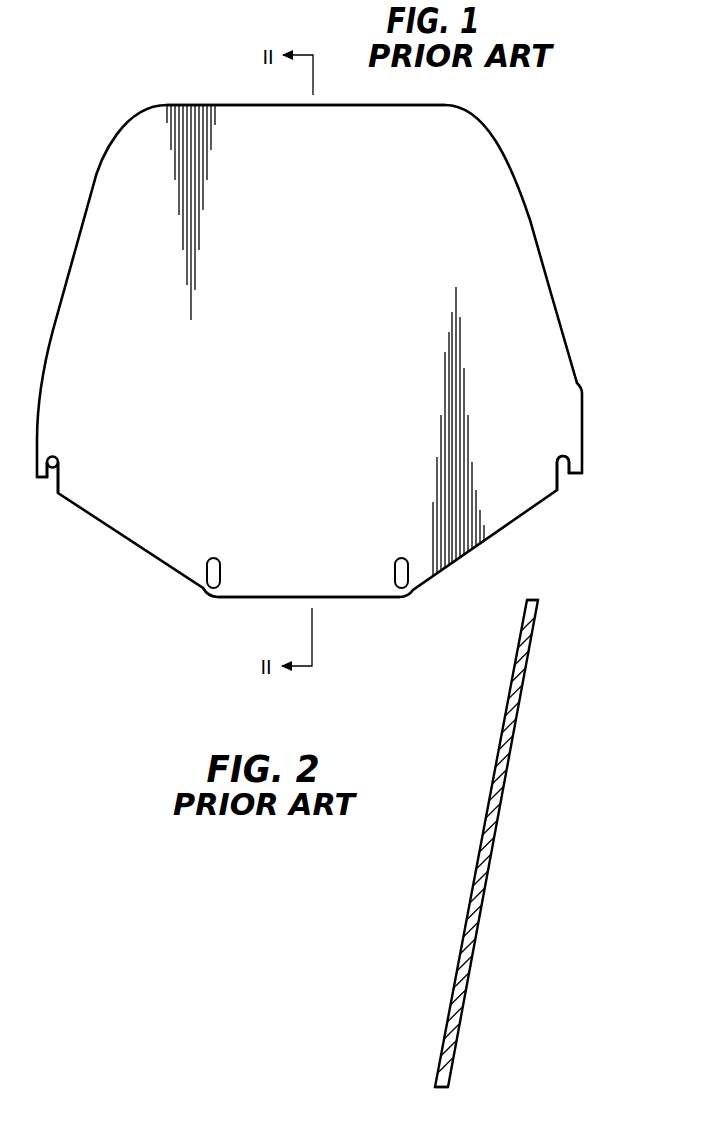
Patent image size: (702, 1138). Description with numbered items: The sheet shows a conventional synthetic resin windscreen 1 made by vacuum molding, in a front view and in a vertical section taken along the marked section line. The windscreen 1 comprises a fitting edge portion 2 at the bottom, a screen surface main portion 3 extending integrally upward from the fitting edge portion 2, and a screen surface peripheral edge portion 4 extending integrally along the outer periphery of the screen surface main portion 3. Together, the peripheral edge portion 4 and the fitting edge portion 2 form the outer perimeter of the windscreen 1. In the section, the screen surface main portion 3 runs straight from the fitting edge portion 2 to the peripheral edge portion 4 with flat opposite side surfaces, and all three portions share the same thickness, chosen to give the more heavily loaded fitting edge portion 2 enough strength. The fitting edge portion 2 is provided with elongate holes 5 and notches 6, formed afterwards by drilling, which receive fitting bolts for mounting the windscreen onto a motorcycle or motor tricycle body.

In FIG. 1, the windscreen 1 is at (537, 218).
In FIG. 2, the windscreen 1 is at (533, 719).
In FIG. 1, the fitting edge portion 2 is at (268, 578).
In FIG. 2, the fitting edge portion 2 is at (437, 1049).
In FIG. 1, the screen surface main portion 3 is at (338, 353).
In FIG. 2, the screen surface main portion 3 is at (481, 808).
In FIG. 1, the screen surface peripheral edge portion 4 is at (90, 189).
In FIG. 2, the screen surface peripheral edge portion 4 is at (535, 635).
In FIG. 1, the elongate holes 5 is at (200, 590).
In FIG. 1, the notches 6 is at (52, 466).